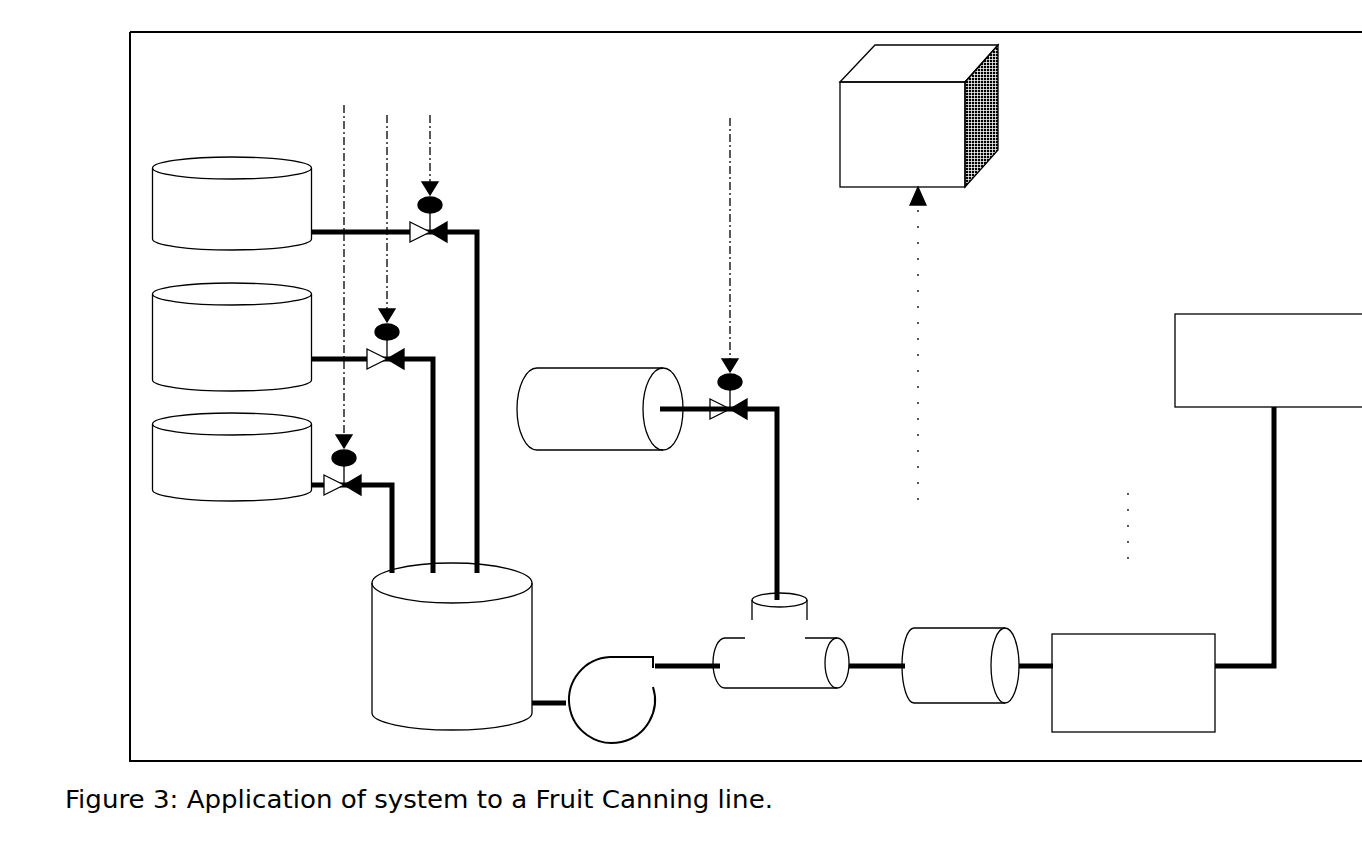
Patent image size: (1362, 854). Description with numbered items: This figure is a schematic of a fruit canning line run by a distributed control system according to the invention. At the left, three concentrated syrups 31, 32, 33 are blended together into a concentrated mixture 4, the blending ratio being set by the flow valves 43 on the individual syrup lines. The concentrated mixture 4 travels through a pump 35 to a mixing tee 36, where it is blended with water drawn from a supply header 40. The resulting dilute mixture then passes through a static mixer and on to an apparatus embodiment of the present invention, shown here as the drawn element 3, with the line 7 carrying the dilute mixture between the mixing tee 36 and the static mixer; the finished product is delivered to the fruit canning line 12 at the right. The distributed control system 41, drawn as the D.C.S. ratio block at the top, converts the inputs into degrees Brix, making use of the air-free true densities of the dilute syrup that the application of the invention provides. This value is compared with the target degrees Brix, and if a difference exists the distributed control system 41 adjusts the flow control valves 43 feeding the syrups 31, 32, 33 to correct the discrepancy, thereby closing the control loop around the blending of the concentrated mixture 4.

The apparatus embodiment / static mixer system 3 is at (948, 628).
The concentrated mixture 4 is at (452, 646).
The pipe line between mix tee and static mixer 7 is at (880, 669).
The fruit canning line 12 is at (1268, 490).
The concentrated syrup 31 is at (232, 203).
The concentrated syrup 32 is at (232, 337).
The concentrated syrup 33 is at (232, 457).
The pump 35 is at (612, 700).
The mixing tee 36 is at (781, 640).
The supply header 40 is at (600, 409).
The distributed control system 41 is at (984, 306).
The flow valves 43 is at (722, 378).